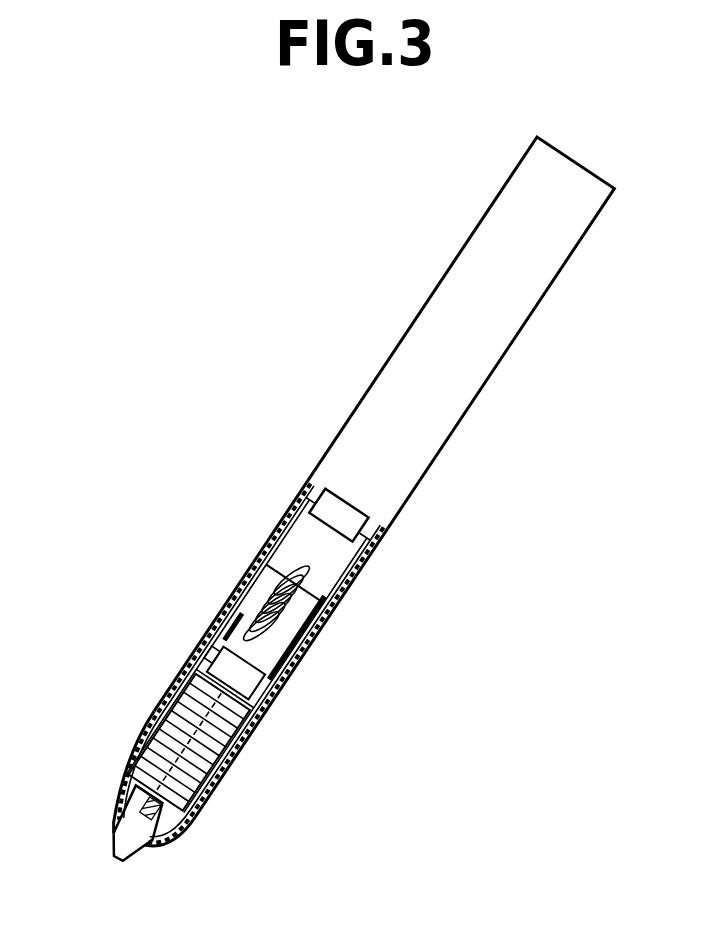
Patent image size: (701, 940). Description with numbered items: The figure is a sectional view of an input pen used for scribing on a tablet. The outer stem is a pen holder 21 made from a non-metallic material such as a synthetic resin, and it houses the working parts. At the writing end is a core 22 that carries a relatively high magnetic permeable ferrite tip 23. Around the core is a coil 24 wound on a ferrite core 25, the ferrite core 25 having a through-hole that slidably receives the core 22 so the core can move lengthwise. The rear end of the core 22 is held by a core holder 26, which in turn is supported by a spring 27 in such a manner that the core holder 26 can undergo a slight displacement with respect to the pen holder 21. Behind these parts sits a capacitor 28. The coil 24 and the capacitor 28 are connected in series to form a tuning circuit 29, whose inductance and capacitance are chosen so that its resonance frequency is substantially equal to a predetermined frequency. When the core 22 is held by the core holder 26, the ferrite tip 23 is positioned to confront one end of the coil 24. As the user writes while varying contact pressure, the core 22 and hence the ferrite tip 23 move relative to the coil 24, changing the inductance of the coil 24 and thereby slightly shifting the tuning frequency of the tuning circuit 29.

The pen holder 21 is at (413, 320).
The core 22 is at (108, 840).
The ferrite tip 23 is at (183, 824).
The coil 24 is at (228, 764).
The ferrite core 25 is at (156, 715).
The core holder 26 is at (283, 668).
The spring 27 is at (250, 585).
The capacitor 28 is at (352, 512).
The tuning circuit 29 is at (340, 597).